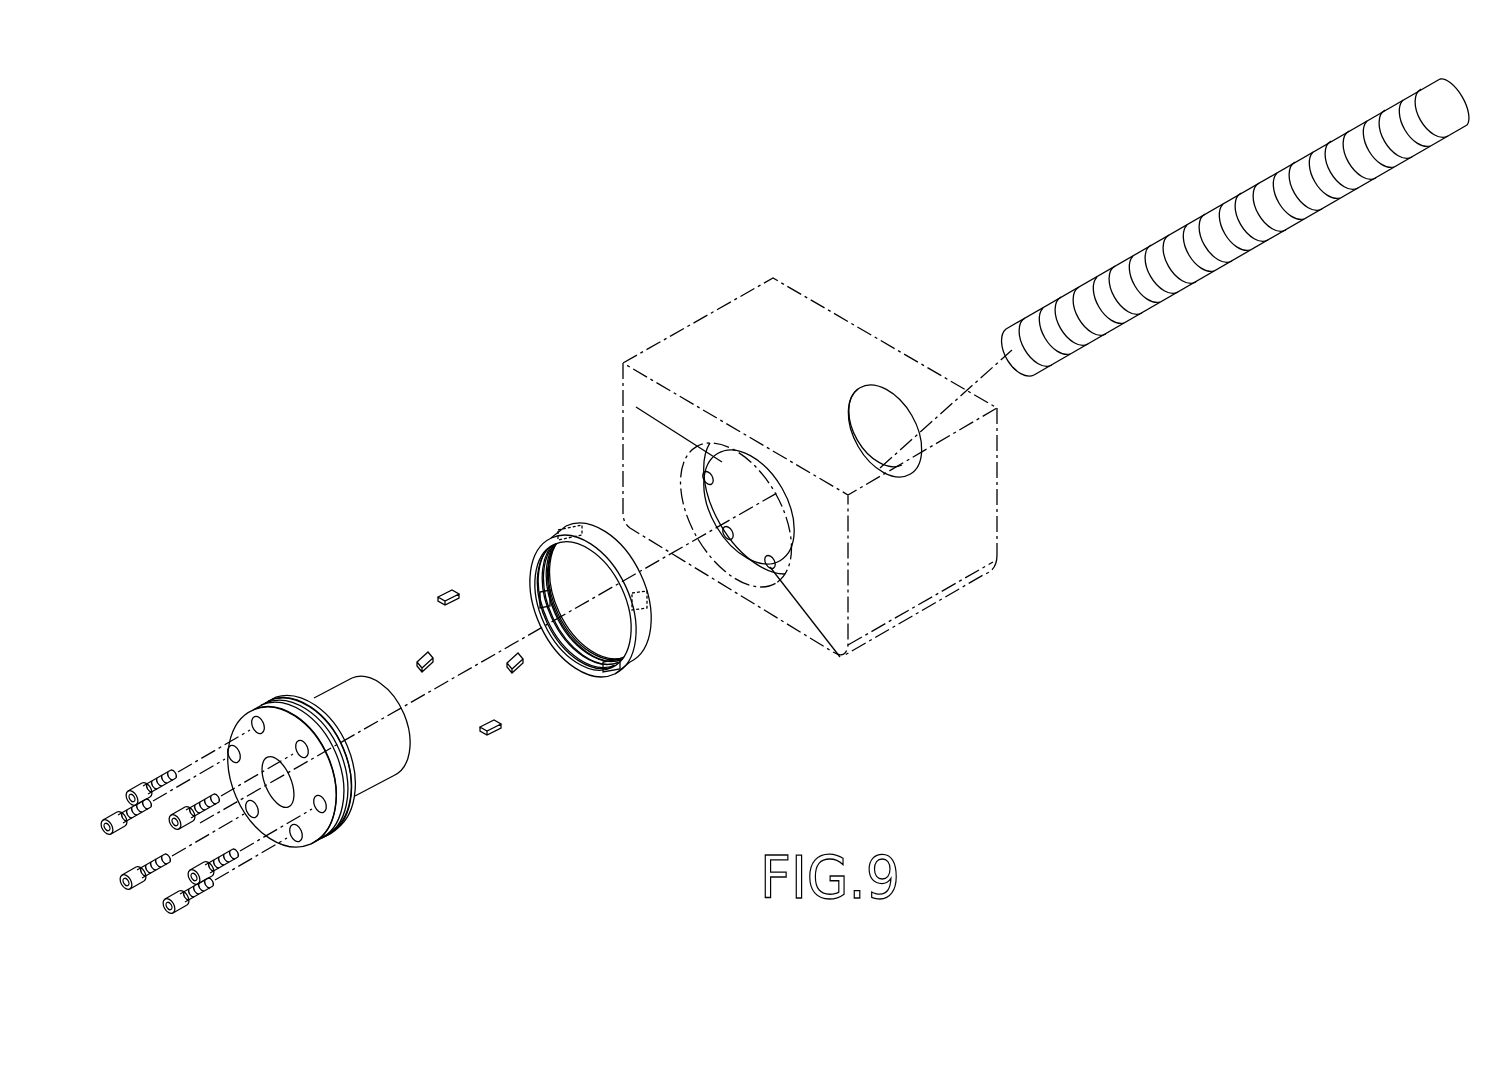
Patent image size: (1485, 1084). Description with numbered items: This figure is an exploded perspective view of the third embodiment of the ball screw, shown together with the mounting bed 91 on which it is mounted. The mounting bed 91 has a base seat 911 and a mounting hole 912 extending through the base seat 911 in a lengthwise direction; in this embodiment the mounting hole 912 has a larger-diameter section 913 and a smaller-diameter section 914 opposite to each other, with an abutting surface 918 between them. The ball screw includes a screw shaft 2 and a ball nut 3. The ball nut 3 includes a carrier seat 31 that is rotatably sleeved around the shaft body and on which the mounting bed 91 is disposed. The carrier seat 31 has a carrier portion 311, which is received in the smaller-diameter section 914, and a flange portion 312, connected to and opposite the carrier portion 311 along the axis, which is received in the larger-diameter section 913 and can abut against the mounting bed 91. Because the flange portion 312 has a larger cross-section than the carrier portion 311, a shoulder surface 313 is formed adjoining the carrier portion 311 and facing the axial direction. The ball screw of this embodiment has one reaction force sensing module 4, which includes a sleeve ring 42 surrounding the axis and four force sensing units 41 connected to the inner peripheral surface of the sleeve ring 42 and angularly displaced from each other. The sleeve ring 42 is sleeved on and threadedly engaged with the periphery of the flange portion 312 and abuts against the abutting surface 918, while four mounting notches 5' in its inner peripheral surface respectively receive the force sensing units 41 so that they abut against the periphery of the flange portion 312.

The screw shaft 2 is at (1241, 265).
The ball nut 3 is at (312, 729).
The carrier seat 31 is at (358, 745).
The carrier portion 311 is at (347, 692).
The flange portion 312 is at (237, 723).
The shoulder surface 313 is at (313, 713).
The reaction force sensing module 4 is at (571, 574).
The force sensing unit 41 is at (446, 594).
The sleeve ring 42 is at (540, 538).
The mounting notch 5' is at (571, 644).
The mounting bed 91 is at (798, 464).
The base seat 911 is at (953, 562).
The mounting hole 912 is at (772, 582).
The larger-diameter section 913 is at (738, 572).
The smaller-diameter section 914 is at (863, 505).
The abutting surface 918 is at (628, 400).